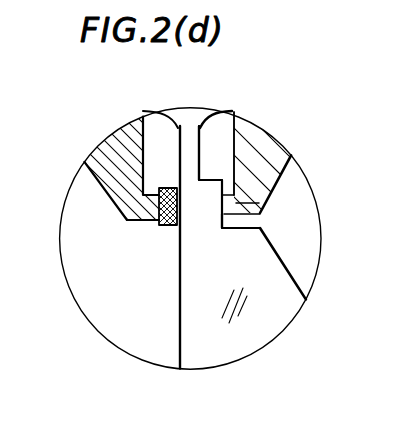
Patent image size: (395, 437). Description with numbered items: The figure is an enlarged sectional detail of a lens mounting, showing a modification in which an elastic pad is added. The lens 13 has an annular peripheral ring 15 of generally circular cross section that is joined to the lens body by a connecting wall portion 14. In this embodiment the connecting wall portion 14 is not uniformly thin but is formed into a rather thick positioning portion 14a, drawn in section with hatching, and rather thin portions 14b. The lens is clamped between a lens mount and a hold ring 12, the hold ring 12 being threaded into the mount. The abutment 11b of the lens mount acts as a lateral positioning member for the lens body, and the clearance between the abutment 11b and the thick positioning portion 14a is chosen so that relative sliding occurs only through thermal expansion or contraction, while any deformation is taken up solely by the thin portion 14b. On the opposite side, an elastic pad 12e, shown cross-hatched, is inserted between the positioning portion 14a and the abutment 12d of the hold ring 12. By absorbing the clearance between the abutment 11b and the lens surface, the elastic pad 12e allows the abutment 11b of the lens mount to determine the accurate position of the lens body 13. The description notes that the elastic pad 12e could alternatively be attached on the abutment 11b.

The abutment 11b is at (250, 212).
The hold ring 12 is at (109, 149).
The abutment 12d is at (137, 224).
The elastic pad 12e is at (172, 225).
The lens 13 is at (268, 271).
The thin connecting wall portion 14 is at (332, 86).
The positioning portion 14a is at (236, 183).
The thin portion 14b is at (198, 151).
The peripheral ring 15 is at (182, 108).